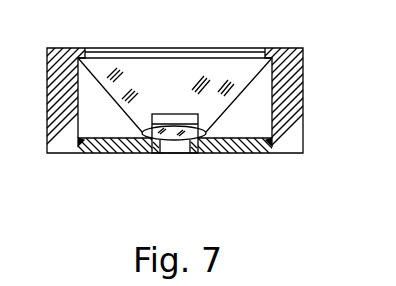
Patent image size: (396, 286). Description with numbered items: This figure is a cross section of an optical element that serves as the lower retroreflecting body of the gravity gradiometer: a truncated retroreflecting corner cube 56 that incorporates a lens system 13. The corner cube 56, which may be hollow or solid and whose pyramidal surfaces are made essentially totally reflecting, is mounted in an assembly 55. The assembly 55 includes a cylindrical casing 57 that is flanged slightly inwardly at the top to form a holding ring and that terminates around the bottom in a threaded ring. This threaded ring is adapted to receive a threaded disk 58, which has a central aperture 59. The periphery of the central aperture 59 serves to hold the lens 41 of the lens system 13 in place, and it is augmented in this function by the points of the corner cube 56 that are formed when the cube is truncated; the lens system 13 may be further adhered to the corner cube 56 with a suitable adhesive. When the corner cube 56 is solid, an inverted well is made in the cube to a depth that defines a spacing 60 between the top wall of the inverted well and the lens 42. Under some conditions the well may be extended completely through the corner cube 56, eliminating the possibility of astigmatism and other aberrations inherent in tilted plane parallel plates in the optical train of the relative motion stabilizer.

The assembly 55 is at (309, 59).
The corner cube 56 is at (192, 70).
The cylindrical casing 57 is at (293, 127).
The threaded disk 58 is at (270, 145).
The lens 42 is at (217, 147).
The spacing 60 is at (170, 114).
The central aperture 59 is at (174, 141).
The lens system 13 is at (160, 150).
The lens 41 is at (192, 142).